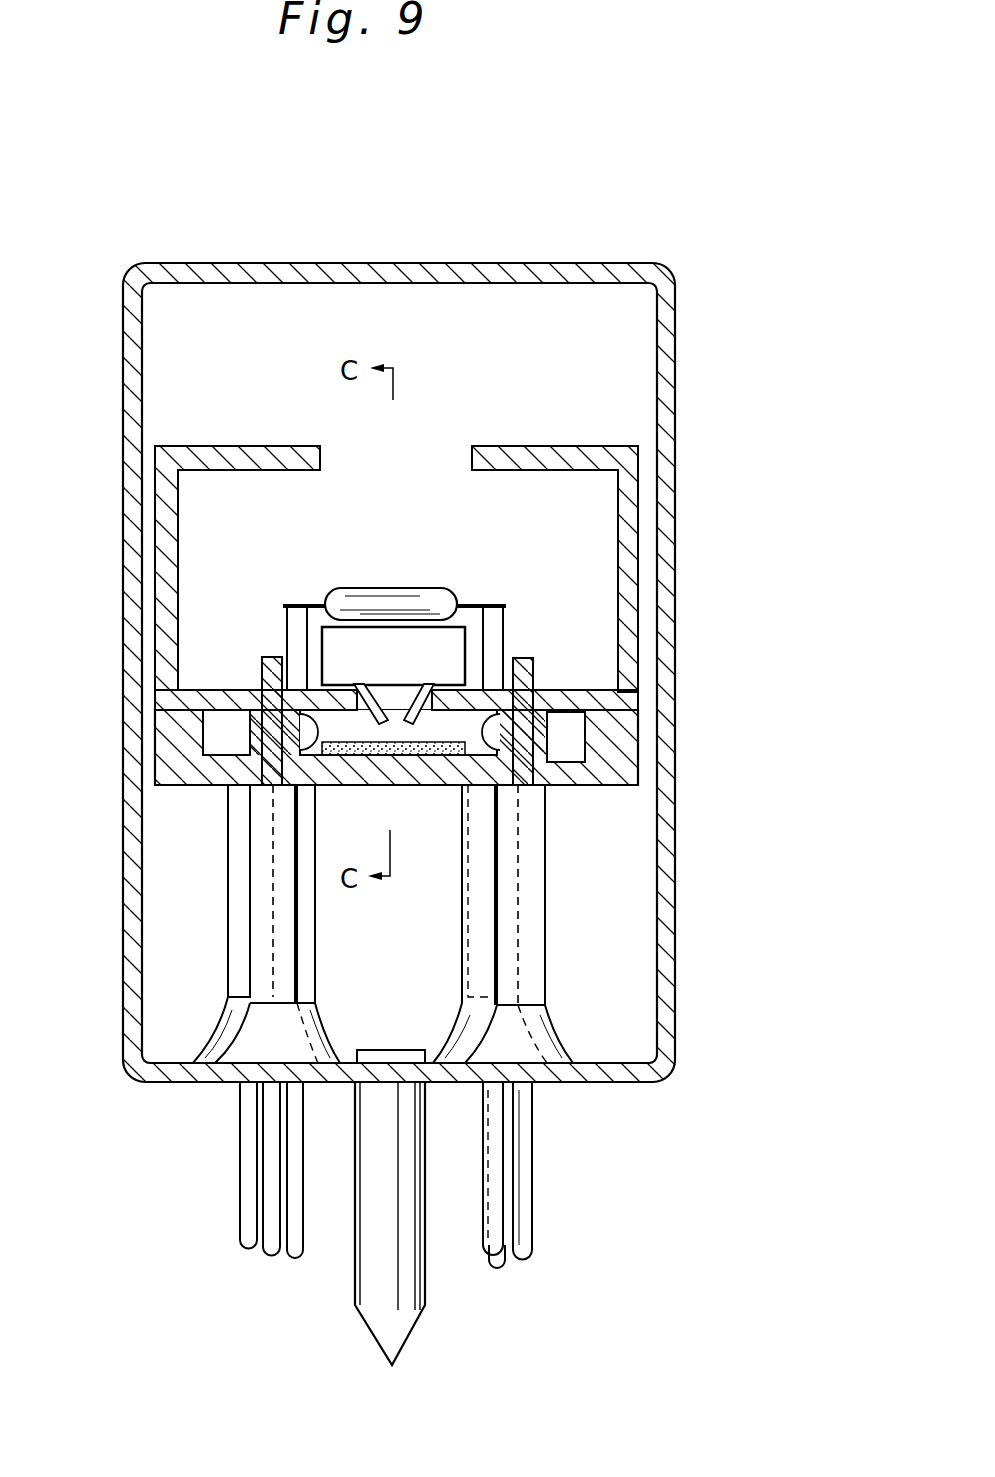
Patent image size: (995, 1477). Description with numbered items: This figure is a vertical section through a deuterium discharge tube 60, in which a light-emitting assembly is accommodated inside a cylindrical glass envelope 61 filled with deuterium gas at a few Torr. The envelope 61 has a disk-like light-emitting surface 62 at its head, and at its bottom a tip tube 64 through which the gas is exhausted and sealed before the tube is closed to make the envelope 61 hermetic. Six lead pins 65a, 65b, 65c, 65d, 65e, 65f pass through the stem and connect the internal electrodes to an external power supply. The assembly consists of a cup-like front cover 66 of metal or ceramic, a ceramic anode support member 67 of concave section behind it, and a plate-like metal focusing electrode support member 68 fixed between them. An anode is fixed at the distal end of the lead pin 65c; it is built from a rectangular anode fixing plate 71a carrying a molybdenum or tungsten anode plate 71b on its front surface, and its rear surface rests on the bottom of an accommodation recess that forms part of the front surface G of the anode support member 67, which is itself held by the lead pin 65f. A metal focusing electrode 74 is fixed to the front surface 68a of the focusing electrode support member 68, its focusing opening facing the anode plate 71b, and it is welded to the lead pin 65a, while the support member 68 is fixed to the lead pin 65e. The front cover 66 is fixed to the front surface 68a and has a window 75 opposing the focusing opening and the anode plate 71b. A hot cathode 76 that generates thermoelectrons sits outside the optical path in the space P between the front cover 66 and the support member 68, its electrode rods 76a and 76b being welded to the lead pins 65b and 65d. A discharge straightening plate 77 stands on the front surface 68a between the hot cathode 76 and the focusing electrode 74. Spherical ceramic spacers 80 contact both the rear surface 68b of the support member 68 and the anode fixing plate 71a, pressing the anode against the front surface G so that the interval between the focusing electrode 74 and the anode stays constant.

The deuterium discharge tube 60 is at (684, 248).
The envelope 61 is at (662, 522).
The light-emitting surface 62 is at (417, 273).
The tip tube 64 is at (428, 1300).
The lead pin 65a is at (494, 1228).
The lead pin 65b is at (527, 1182).
The lead pin 65c is at (500, 1267).
The lead pin 65d is at (293, 1260).
The lead pin 65e is at (243, 1246).
The lead pin 65f is at (268, 1258).
The front cover 66 is at (585, 450).
The anode support member 67 is at (627, 740).
The focusing electrode support member 68 is at (580, 693).
The front surface 68a is at (242, 690).
The rear surface 68b is at (228, 712).
The anode fixing plate 71a is at (432, 762).
The anode plate 71b is at (393, 656).
The focusing electrode 74 is at (330, 670).
The window 75 is at (415, 468).
The hot cathode 76 is at (432, 598).
The electrode rod 76a is at (310, 600).
The electrode rod 76b is at (492, 605).
The discharge straightening plate 77 is at (452, 662).
The spacer 80 is at (262, 790).
The space P is at (595, 585).
The front surface G is at (600, 700).